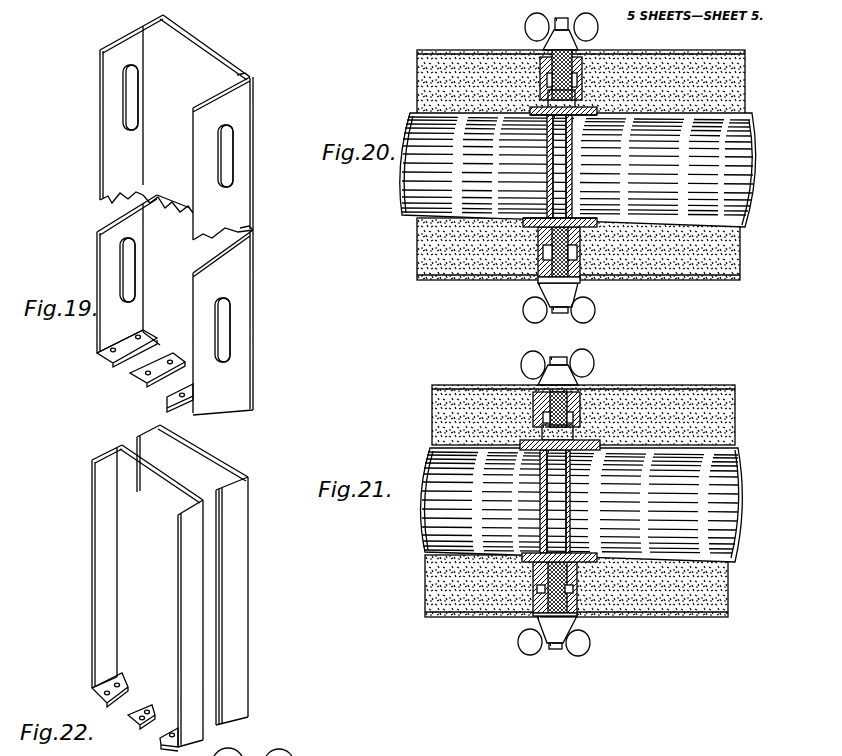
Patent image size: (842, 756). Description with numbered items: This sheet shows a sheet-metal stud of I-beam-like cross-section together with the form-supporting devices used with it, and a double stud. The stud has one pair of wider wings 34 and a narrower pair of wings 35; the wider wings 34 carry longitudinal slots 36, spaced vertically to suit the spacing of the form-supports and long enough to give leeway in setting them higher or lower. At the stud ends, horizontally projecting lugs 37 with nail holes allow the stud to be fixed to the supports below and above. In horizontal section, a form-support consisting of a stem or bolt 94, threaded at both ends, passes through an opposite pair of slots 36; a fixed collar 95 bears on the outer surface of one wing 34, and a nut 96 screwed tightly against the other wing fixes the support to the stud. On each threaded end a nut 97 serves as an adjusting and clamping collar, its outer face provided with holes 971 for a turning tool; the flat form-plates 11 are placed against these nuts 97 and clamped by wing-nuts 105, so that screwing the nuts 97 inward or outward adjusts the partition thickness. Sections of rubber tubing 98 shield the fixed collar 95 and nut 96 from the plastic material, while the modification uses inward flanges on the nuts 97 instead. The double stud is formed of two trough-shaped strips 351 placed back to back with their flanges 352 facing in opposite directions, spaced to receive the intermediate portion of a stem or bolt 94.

In FIG. 20, the form-plate 11 is at (700, 56).
In FIG. 21, the form-plate 11 is at (689, 390).
In FIG. 19, the wider wings 34 is at (110, 43).
In FIG. 20, the wider wings 34 is at (600, 110).
In FIG. 21, the wider wings 34 is at (600, 445).
In FIG. 19, the narrower wings 35 is at (167, 30).
In FIG. 19, the longitudinal slots 36 is at (130, 88).
In FIG. 20, the longitudinal slots 36 is at (590, 122).
In FIG. 21, the longitudinal slots 36 is at (572, 470).
In FIG. 19, the lugs 37 is at (110, 362).
In FIG. 20, the stem or bolt 94 is at (570, 150).
In FIG. 21, the stem or bolt 94 is at (568, 492).
In FIG. 20, the fixed collar 95 is at (586, 83).
In FIG. 21, the fixed collar 95 is at (540, 420).
In FIG. 20, the nut 96 is at (538, 238).
In FIG. 21, the nut 96 is at (537, 590).
In FIG. 20, the nut 97 is at (542, 72).
In FIG. 21, the nut 97 is at (533, 400).
In FIG. 20, the holes 971 is at (540, 63).
In FIG. 20, the rubber tubing 98 is at (530, 110).
In FIG. 20, the wing-nut 105 is at (590, 30).
In FIG. 21, the wing-nut 105 is at (580, 368).
In FIG. 22, the trough-shaped strips 351 is at (192, 463).
In FIG. 22, the flanges 352 is at (160, 437).